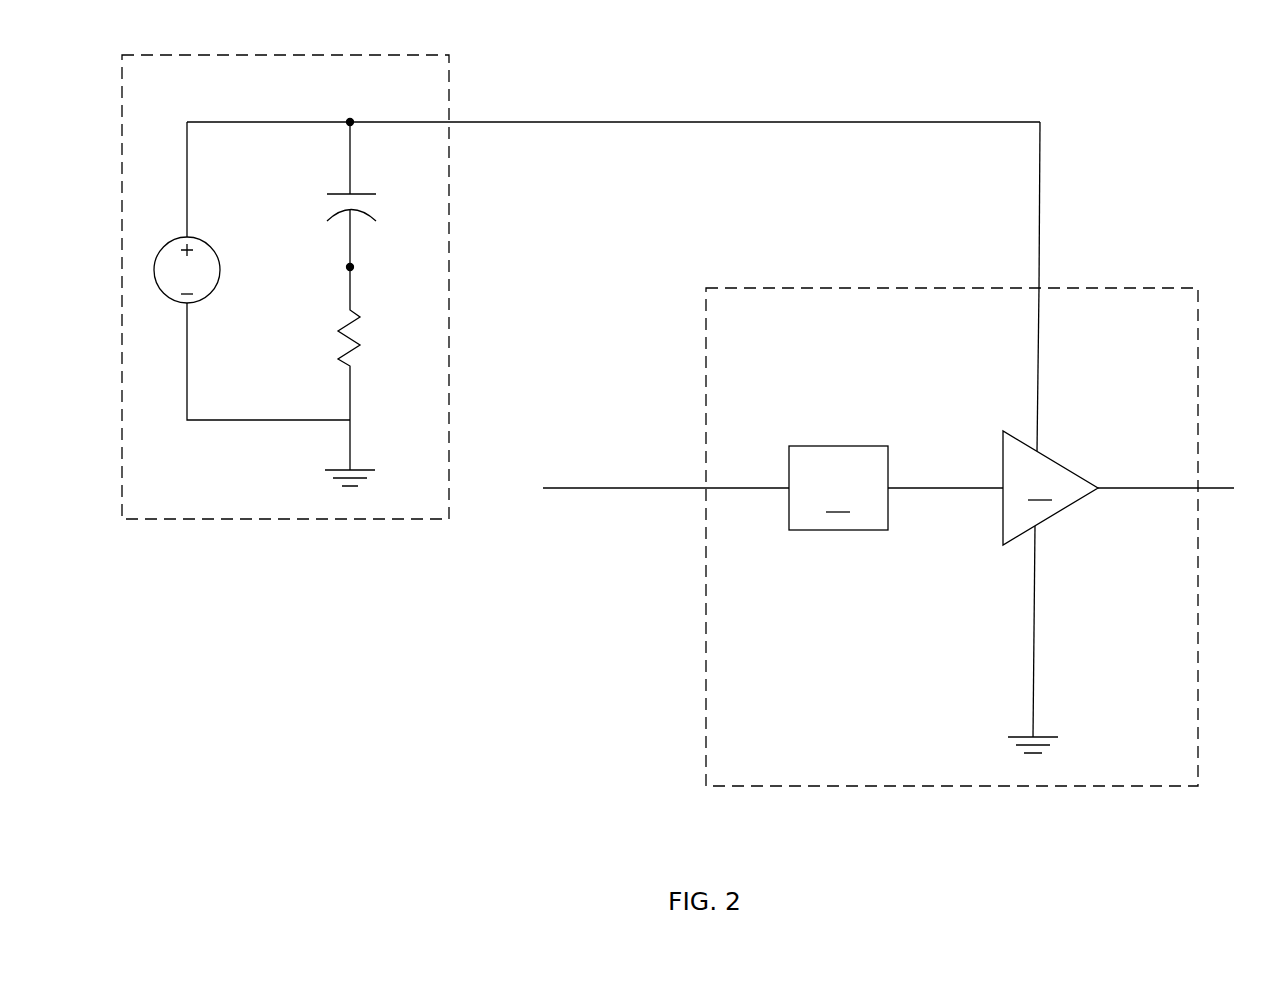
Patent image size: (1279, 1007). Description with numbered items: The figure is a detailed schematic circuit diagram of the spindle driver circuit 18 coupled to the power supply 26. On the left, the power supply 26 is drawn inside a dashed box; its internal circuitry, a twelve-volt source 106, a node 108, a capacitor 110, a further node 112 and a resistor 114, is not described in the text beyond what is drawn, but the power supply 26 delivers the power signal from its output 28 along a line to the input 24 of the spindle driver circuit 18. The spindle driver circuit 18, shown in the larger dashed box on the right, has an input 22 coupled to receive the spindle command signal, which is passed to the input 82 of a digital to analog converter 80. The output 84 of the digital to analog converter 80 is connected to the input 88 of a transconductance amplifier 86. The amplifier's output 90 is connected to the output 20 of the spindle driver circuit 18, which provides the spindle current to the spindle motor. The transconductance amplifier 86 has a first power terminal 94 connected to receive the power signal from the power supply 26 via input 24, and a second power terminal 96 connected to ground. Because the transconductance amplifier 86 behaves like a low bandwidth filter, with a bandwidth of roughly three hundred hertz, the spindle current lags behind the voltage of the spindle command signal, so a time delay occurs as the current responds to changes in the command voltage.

The spindle driver circuit 18 is at (1063, 788).
The output 20 is at (1200, 490).
The input 22 is at (706, 486).
The input 24 is at (1040, 288).
The power supply 26 is at (352, 521).
The output 28 is at (450, 123).
The digital to analog converter 80 is at (838, 488).
The input 82 is at (787, 486).
The output 84 is at (889, 486).
The transconductance amplifier 86 is at (1050, 488).
The input 88 is at (1002, 490).
The output 90 is at (1099, 487).
The first power terminal 94 is at (1040, 450).
The second power terminal 96 is at (1040, 532).
The 12V voltage source 106 is at (214, 253).
The supply node 108 is at (349, 121).
The power supply capacitor CPS 110 is at (338, 192).
The intermediate node 112 is at (351, 266).
The power supply resistor RPS 114 is at (346, 318).